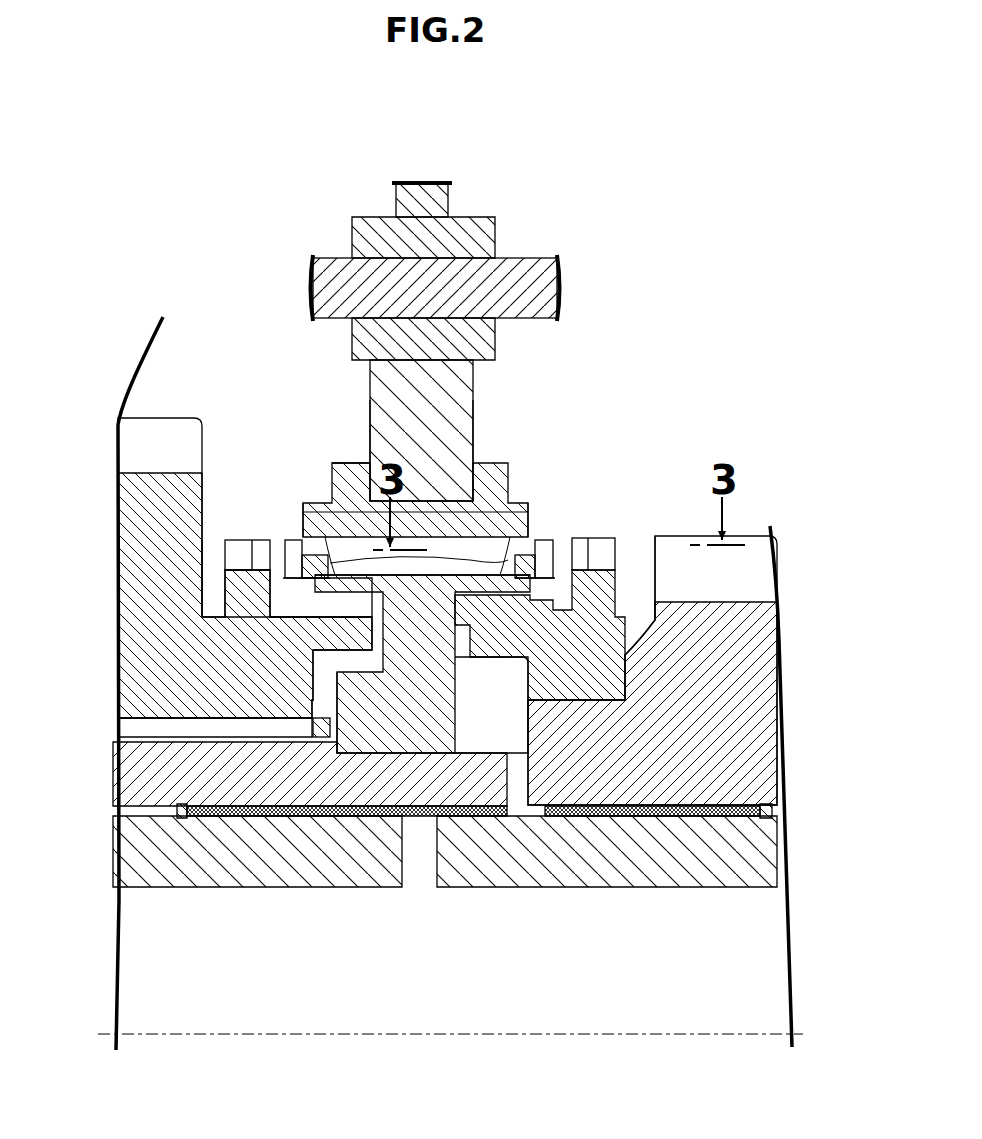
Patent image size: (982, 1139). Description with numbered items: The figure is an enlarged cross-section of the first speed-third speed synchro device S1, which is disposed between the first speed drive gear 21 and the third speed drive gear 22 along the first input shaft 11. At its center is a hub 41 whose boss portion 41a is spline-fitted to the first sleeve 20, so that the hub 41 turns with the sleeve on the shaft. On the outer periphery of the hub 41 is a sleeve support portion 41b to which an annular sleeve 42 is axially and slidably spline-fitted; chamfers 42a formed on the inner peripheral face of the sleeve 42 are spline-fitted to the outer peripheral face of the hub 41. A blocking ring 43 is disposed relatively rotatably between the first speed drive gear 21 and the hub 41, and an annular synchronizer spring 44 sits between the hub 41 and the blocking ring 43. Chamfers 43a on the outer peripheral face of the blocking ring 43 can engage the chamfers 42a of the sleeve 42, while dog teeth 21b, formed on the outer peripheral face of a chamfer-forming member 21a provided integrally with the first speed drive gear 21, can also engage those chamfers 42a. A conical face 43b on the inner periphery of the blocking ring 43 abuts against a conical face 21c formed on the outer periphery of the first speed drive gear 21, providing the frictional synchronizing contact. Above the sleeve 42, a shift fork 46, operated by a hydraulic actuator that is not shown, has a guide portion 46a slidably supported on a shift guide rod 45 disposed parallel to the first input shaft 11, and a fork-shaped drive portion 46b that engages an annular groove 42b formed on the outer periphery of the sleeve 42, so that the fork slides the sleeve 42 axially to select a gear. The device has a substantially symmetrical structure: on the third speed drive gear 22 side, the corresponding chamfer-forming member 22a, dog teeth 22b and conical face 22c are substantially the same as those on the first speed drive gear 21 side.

The first input shaft 11 is at (686, 860).
The first sleeve 20 is at (285, 783).
The first speed drive gear 21 is at (790, 572).
The chamfer-forming member 21a is at (621, 604).
The dog teeth 21b is at (605, 548).
The conical face 21c is at (527, 610).
The third speed drive gear 22 is at (106, 482).
The chamfer-forming member 22a is at (214, 592).
The dog teeth 22b is at (238, 545).
The conical face 22c is at (322, 642).
The hub 41 is at (423, 748).
The boss portion 41a is at (388, 720).
The sleeve support portion 41b is at (440, 574).
The sleeve 42 is at (336, 464).
The chamfers 42a is at (297, 538).
The annular groove 42b is at (398, 452).
The blocking ring 43 is at (281, 536).
The chamfers 43a is at (302, 560).
The conical face 43b is at (330, 664).
The synchronizer spring 44 is at (290, 560).
The shift guide rod 45 is at (520, 262).
The shift fork 46 is at (478, 380).
The guide portion 46a is at (471, 222).
The fork-shaped drive portion 46b is at (452, 447).
The first speed-third speed synchro device S1 is at (620, 418).